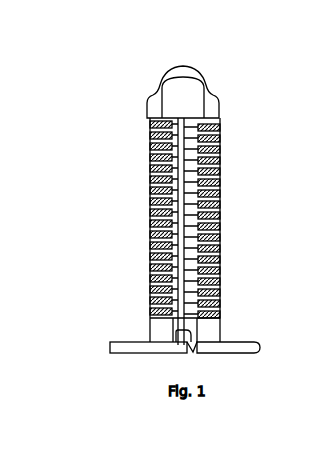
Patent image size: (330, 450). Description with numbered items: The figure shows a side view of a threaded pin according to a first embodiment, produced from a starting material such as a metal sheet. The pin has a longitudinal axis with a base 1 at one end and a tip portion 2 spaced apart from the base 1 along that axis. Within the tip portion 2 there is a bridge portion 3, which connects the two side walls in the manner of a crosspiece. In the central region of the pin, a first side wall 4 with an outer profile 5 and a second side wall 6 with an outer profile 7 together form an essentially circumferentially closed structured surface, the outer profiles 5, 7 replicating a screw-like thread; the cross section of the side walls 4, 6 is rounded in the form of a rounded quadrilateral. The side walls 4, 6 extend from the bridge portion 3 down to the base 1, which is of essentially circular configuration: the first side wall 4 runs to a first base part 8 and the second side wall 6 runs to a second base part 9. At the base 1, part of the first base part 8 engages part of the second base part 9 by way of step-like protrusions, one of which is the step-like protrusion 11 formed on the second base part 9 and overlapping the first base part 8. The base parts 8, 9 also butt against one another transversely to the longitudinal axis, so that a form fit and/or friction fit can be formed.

The base 1 is at (93, 347).
The tip portion 2 is at (143, 55).
The bridge portion 3 is at (192, 74).
The first side wall 4 is at (150, 213).
The outer profile 5 is at (142, 268).
The second side wall 6 is at (223, 233).
The outer profile 7 is at (229, 273).
The first base part 8 is at (125, 347).
The second base part 9 is at (256, 343).
The step-like protrusion 11 is at (190, 350).